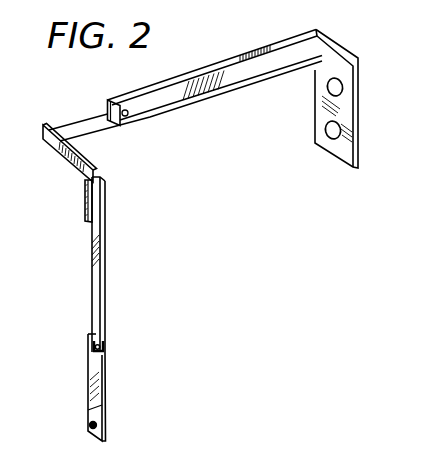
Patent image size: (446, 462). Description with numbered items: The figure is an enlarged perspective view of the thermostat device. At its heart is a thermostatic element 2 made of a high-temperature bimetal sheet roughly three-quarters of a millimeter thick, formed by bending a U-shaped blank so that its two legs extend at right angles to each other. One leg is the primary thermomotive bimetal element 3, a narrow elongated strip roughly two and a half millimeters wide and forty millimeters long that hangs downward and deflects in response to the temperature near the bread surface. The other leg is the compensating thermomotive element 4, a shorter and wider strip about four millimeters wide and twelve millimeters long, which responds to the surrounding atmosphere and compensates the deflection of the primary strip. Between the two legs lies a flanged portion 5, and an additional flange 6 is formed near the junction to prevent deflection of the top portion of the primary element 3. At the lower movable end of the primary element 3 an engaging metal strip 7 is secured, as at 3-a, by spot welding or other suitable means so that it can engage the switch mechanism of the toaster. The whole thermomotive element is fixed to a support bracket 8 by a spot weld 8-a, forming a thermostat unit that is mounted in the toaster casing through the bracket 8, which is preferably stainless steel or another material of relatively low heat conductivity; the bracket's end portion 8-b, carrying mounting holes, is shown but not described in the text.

The thermostatic element 2 is at (116, 224).
The primary thermomotive bimetal element 3 is at (100, 256).
The spot weld 3-a is at (103, 347).
The compensating thermomotive element 4 is at (108, 133).
The flanged portion 5 is at (53, 143).
The additional flange 6 is at (85, 200).
The engaging metal strip 7 is at (88, 394).
The support bracket 8 is at (218, 90).
The spot weld 8-a is at (122, 111).
The end plate with holes on slide bar 8-b is at (348, 98).